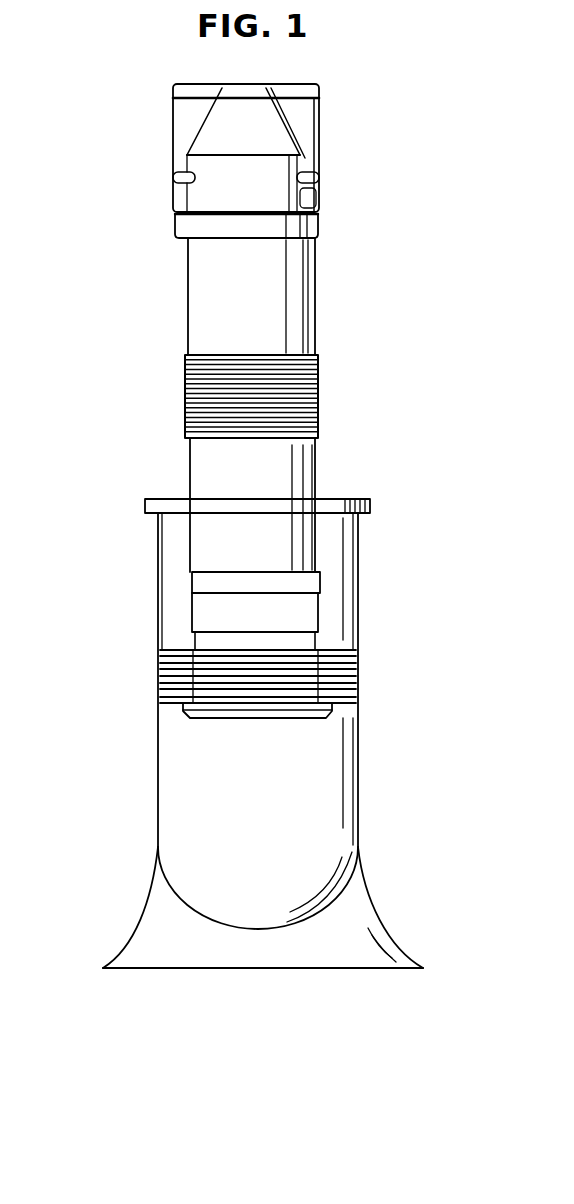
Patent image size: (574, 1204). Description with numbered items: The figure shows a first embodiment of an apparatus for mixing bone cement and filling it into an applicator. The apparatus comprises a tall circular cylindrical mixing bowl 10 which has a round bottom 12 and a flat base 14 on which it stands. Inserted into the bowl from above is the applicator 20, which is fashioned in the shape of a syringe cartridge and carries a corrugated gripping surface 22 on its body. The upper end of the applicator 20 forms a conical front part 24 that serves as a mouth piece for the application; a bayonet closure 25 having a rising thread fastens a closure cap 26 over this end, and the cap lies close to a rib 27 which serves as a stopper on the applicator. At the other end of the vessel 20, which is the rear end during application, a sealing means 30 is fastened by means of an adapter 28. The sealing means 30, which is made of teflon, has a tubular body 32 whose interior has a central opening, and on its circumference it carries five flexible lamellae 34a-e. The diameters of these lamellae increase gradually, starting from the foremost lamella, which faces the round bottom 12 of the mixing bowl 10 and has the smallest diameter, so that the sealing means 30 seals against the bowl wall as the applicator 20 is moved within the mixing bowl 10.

The mixing bowl 10 is at (173, 570).
The round bottom 12 is at (330, 905).
The flat base 14 is at (233, 962).
The applicator 20 is at (326, 290).
The corrugated gripping surface 22 is at (318, 402).
The conical front part 24 is at (285, 133).
The bayonet closure 25 is at (180, 178).
The closure cap 26 is at (183, 127).
The rib 27 is at (320, 227).
The adapter 28 is at (320, 598).
The sealing means 30 is at (296, 724).
The tubular body 32 is at (252, 722).
The flexible lamellae 34a-e is at (185, 708).